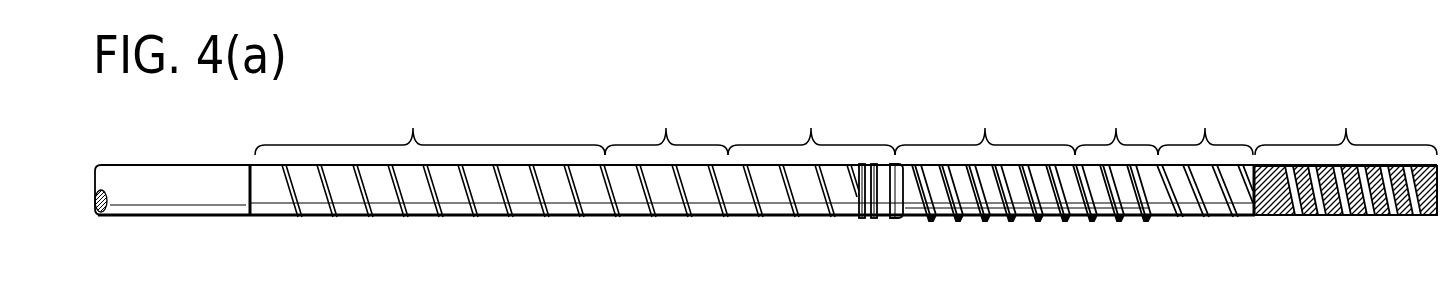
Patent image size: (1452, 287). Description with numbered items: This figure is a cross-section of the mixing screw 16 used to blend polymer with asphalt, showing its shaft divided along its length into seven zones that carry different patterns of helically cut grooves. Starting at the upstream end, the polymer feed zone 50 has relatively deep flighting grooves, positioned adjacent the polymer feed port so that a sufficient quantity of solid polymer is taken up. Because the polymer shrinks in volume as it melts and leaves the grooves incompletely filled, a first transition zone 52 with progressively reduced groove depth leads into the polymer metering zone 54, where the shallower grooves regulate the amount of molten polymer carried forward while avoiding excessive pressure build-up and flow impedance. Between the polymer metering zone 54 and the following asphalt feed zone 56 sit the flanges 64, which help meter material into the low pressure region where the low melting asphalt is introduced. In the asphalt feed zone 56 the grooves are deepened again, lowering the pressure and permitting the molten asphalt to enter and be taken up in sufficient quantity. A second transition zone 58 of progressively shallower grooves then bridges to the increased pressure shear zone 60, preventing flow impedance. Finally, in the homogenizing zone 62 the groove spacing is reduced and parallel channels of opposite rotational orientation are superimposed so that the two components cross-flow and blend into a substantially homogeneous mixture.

The mixing screw 16 is at (192, 206).
The polymer feed zone 50 is at (428, 158).
The first transition zone 52 is at (664, 158).
The polymer metering zone 54 is at (811, 158).
The asphalt feed zone 56 is at (1022, 160).
The second transition zone 58 is at (1115, 160).
The increased pressure shear zone 60 is at (1205, 158).
The homogenizing zone 62 is at (1345, 158).
The flanges 64 is at (864, 217).